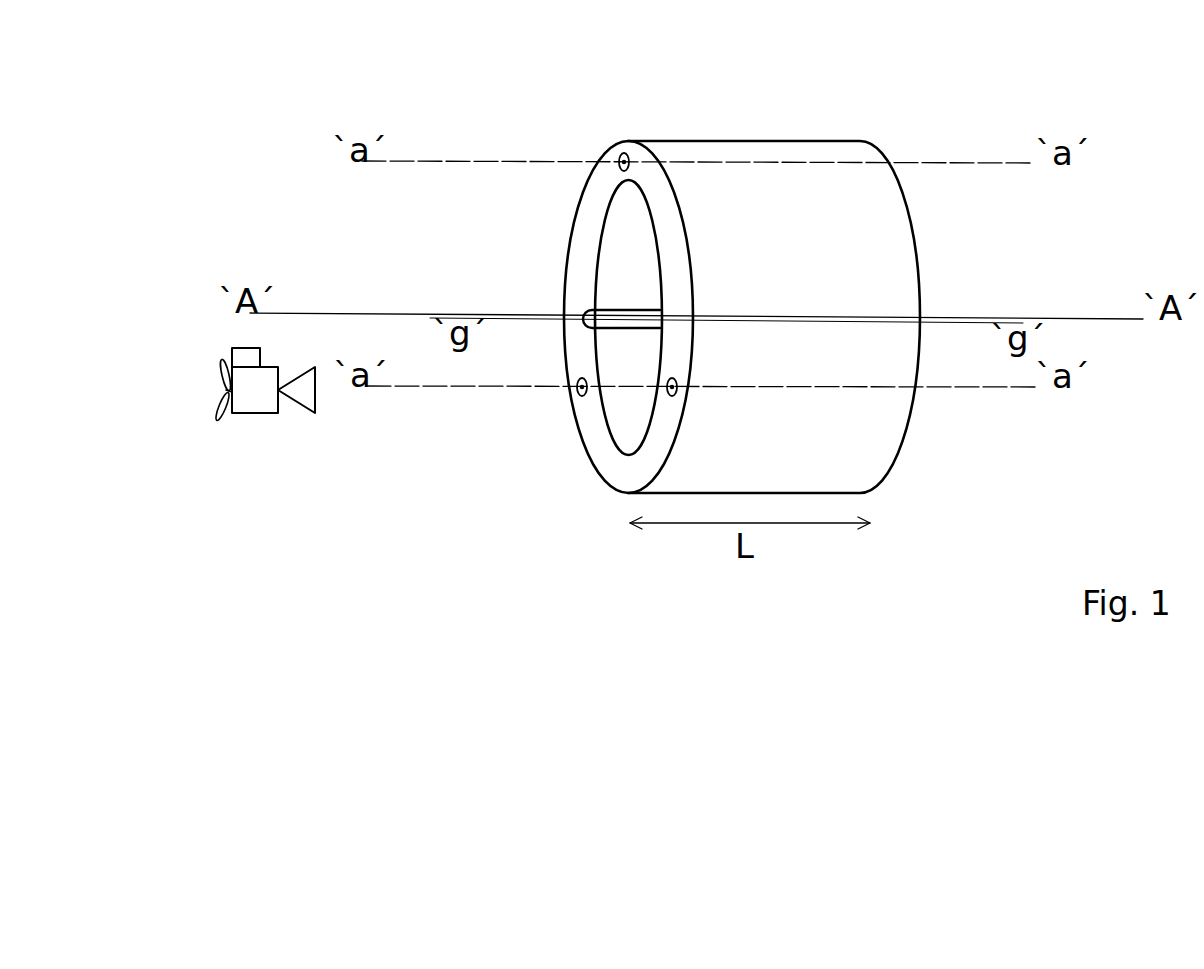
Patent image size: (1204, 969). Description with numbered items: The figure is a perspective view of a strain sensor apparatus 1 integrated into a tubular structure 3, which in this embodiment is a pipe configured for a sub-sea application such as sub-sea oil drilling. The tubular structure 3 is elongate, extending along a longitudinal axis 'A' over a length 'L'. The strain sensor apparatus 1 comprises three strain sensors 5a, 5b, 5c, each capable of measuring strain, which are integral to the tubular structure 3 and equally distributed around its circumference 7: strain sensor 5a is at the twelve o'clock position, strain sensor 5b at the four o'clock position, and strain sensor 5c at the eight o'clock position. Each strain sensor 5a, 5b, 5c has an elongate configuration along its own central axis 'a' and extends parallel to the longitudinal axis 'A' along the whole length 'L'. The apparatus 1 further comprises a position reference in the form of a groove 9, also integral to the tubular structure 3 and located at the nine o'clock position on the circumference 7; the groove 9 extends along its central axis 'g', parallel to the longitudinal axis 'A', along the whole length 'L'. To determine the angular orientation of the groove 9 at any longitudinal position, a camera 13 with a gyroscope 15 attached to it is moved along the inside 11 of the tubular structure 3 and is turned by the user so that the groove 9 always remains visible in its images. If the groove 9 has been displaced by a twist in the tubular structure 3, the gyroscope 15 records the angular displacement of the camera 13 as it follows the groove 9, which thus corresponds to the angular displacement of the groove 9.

The strain sensor apparatus 1 is at (374, 290).
The tubular structure 3 is at (772, 160).
The strain sensor 5a is at (618, 157).
The strain sensor 5b is at (667, 384).
The strain sensor 5c is at (578, 384).
The circumference 7 is at (657, 162).
The groove 9 is at (590, 316).
The inside 11 is at (623, 407).
The camera 13 is at (257, 417).
The gyroscope 15 is at (240, 360).